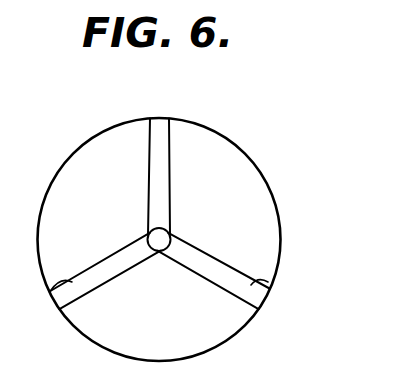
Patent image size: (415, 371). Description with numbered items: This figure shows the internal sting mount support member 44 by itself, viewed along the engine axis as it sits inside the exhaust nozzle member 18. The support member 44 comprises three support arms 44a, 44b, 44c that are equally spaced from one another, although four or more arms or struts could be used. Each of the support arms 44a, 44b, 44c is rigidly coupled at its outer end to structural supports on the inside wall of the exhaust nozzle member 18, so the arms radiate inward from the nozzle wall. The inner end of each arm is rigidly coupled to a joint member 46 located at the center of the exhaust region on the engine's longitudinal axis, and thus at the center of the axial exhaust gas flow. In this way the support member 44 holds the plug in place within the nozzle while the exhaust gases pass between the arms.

The exhaust nozzle member 18 is at (267, 188).
The internal sting mount support member 44 is at (177, 216).
The support arm 44a is at (170, 147).
The support arm 44b is at (273, 281).
The support arm 44c is at (50, 292).
The joint member 46 is at (170, 232).